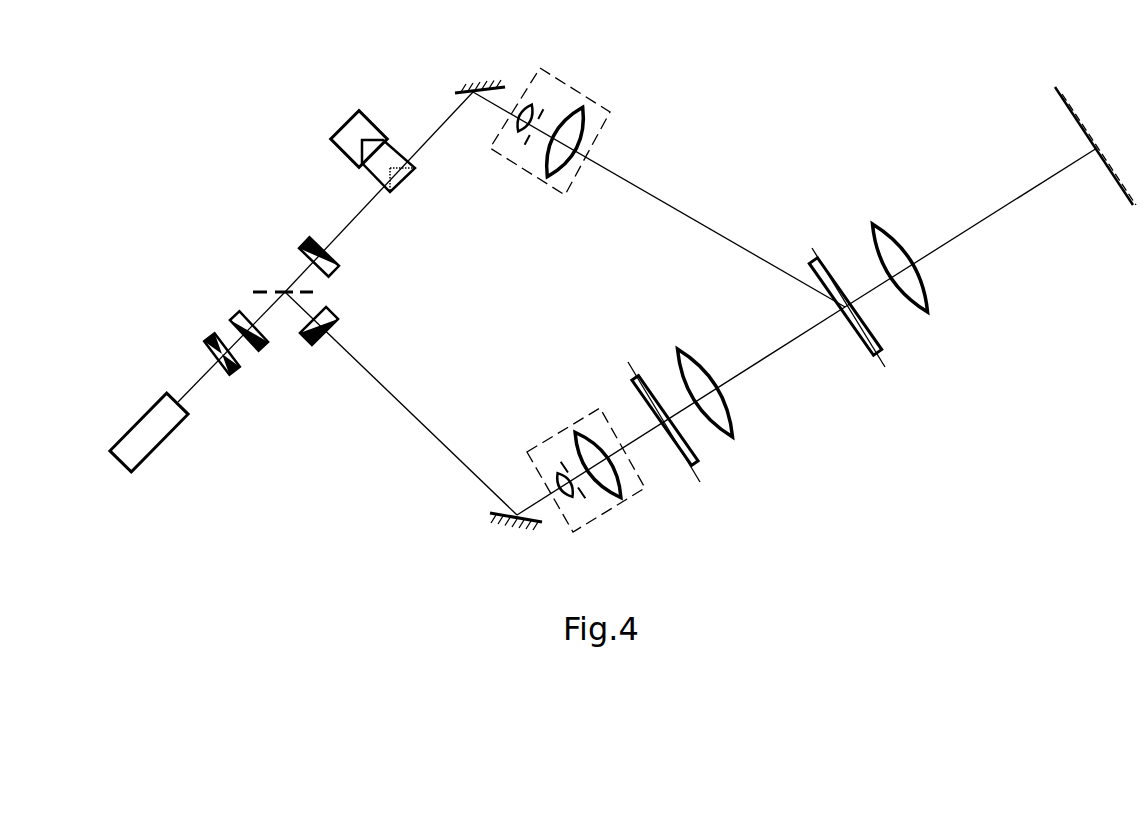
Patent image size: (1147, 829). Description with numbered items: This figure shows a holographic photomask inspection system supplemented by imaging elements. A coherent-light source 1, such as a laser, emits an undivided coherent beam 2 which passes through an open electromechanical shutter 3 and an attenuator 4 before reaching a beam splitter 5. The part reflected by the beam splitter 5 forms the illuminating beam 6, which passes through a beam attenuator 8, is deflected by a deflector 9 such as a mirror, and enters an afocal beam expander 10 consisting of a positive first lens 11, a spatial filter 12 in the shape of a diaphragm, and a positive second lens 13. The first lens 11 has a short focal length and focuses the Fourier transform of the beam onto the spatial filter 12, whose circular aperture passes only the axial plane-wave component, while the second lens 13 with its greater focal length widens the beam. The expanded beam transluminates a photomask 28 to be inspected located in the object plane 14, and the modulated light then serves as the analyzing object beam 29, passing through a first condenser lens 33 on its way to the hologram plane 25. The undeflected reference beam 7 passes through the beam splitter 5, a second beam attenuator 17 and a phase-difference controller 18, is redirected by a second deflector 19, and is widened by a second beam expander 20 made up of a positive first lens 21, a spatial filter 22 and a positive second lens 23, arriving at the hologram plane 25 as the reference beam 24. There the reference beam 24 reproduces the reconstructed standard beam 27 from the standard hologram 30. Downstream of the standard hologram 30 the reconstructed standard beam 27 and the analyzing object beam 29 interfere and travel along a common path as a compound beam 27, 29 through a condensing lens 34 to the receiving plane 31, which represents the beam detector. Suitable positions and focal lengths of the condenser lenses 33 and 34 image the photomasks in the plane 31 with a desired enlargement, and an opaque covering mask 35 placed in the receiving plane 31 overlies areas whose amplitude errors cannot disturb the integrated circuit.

The coherent-light source 1 is at (160, 440).
The undivided coherent beam 2 is at (187, 388).
The electromechanical shutter 3 is at (206, 340).
The attenuator 4 is at (233, 313).
The beam splitter 5 is at (260, 290).
The illuminating beam 6 is at (300, 308).
The reference beam 7 is at (297, 282).
The beam attenuator 8 is at (317, 340).
The deflector 9 is at (488, 517).
The afocal beam expander 10 is at (645, 488).
The positive first lens 11 is at (558, 480).
The spatial filter 12 is at (583, 490).
The positive second lens 13 is at (575, 447).
The object plane 14 is at (698, 470).
The beam attenuator 17 is at (298, 242).
The phase-difference controller 18 is at (387, 160).
The deflector 19 is at (463, 85).
The second beam expander 20 is at (610, 112).
The positive first lens 21 is at (517, 118).
The spatial filter 22 is at (548, 102).
The positive second lens 23 is at (547, 173).
The reference beam 24 is at (708, 227).
The hologram plane 25 is at (885, 362).
The reconstructed standard beam 27 is at (1018, 198).
The photomask 28 is at (648, 380).
The analyzing object beam 29 is at (750, 362).
The standard hologram 30 is at (875, 333).
The receiving plane 31 is at (1067, 100).
The first condenser lens 33 is at (723, 417).
The condensing lens 34 is at (886, 240).
The opaque covering mask 35 is at (1068, 118).